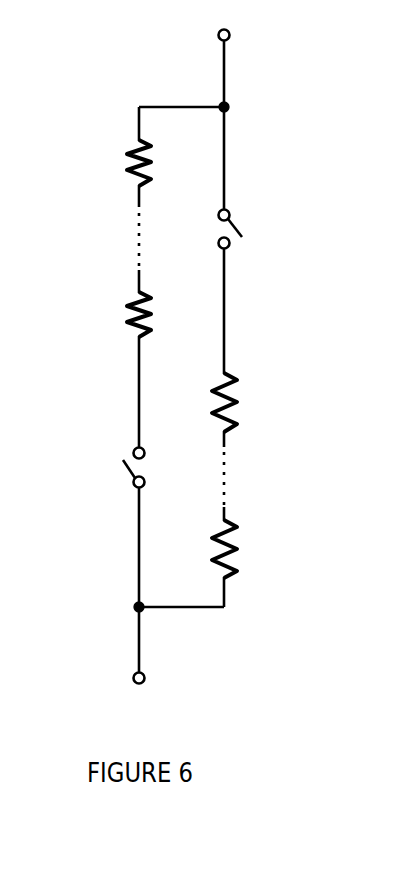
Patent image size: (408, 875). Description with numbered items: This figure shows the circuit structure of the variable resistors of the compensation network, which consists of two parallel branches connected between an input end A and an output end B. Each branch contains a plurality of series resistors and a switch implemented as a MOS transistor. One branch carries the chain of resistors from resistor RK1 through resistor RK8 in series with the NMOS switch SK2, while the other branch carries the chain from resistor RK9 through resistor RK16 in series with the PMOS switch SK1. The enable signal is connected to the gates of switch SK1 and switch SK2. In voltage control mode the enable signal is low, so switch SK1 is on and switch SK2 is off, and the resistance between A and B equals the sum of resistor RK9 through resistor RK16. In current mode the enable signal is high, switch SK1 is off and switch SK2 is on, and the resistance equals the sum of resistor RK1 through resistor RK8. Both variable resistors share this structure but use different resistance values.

The input end A is at (224, 20).
The output end B is at (139, 694).
The resistor RK1 is at (115, 163).
The resistor RK8 is at (115, 314).
The resistor RK9 is at (200, 402).
The resistor RK16 is at (198, 549).
The switch SK1 is at (207, 229).
The switch SK2 is at (116, 468).